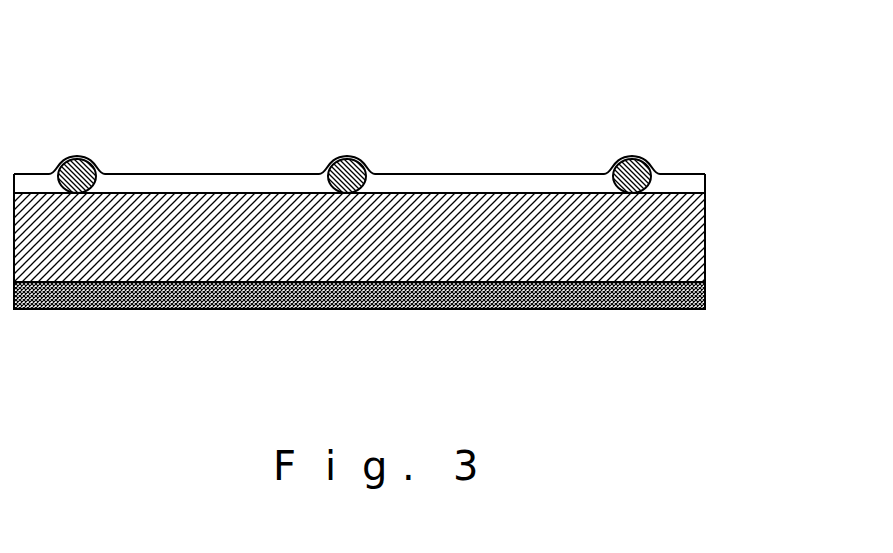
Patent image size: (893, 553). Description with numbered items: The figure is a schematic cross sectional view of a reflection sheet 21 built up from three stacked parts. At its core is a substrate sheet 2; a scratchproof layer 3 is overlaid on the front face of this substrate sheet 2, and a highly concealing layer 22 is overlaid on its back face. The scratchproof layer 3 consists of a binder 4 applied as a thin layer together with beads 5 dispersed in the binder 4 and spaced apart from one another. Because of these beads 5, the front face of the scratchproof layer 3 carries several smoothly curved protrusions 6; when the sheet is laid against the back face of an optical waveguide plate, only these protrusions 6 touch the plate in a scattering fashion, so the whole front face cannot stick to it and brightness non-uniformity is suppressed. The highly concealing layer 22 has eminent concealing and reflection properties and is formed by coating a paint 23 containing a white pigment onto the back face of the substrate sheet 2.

The substrate sheet 2 is at (705, 237).
The scratchproof layer 3 is at (705, 175).
The binder 4 is at (508, 185).
The beads 5 is at (348, 160).
The protrusions 6 is at (640, 155).
The reflection sheet 21 is at (137, 150).
The highly concealing layer 22 is at (705, 292).
The paint 23 is at (328, 310).